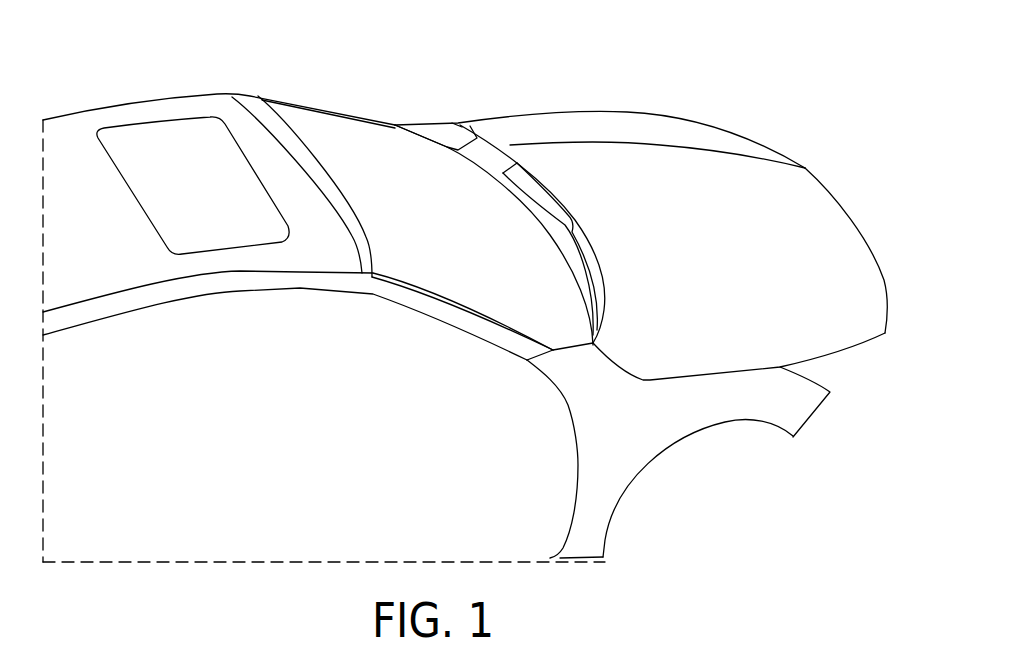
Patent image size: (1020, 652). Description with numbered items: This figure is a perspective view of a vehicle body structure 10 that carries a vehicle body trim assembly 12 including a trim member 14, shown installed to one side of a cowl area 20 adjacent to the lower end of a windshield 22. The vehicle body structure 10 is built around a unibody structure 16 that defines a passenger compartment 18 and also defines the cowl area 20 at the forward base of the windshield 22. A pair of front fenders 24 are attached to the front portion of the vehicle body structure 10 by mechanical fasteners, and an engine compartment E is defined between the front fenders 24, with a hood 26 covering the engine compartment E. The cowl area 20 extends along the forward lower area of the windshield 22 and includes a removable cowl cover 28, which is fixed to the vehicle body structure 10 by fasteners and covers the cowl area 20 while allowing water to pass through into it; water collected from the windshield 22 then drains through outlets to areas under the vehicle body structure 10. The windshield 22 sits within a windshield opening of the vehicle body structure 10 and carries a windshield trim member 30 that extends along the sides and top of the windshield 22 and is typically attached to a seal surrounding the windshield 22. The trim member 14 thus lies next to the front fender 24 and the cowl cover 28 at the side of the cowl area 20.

The vehicle body structure 10 is at (507, 50).
The vehicle body trim assembly 12 is at (393, 120).
The trim member 14 is at (458, 137).
The unibody structure 16 is at (232, 112).
The passenger compartment 18 is at (340, 316).
The cowl area 20 is at (490, 147).
The windshield 22 is at (350, 140).
The front fenders 24 is at (430, 117).
The hood 26 is at (837, 247).
The cowl cover 28 is at (557, 217).
The windshield trim member 30 is at (287, 102).
The engine compartment E is at (800, 190).